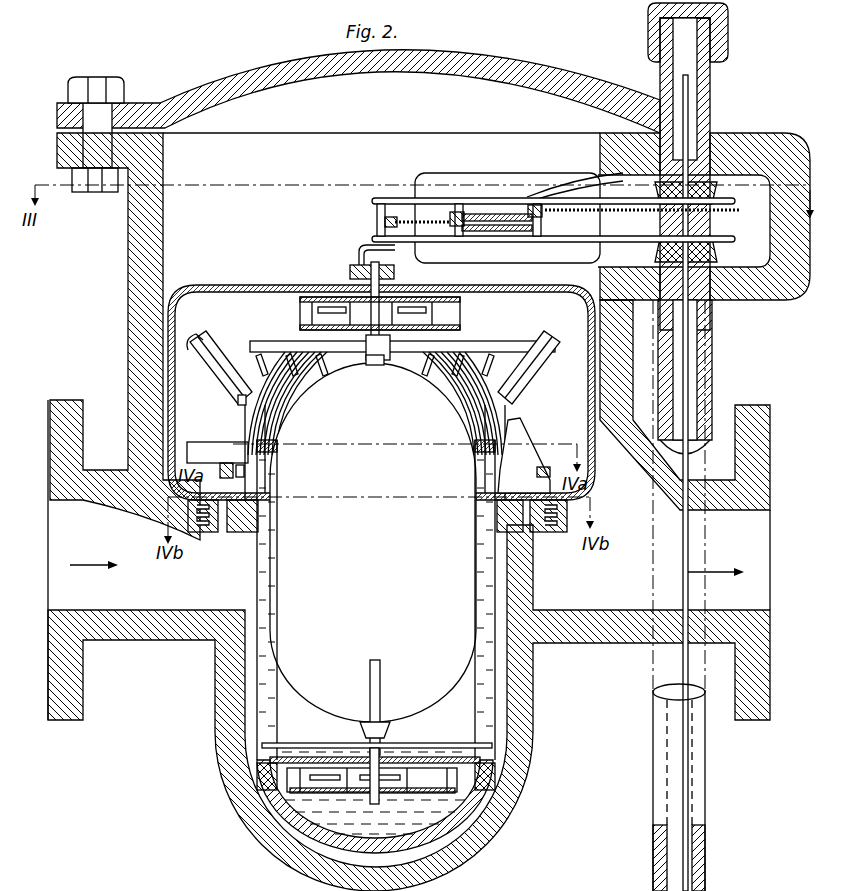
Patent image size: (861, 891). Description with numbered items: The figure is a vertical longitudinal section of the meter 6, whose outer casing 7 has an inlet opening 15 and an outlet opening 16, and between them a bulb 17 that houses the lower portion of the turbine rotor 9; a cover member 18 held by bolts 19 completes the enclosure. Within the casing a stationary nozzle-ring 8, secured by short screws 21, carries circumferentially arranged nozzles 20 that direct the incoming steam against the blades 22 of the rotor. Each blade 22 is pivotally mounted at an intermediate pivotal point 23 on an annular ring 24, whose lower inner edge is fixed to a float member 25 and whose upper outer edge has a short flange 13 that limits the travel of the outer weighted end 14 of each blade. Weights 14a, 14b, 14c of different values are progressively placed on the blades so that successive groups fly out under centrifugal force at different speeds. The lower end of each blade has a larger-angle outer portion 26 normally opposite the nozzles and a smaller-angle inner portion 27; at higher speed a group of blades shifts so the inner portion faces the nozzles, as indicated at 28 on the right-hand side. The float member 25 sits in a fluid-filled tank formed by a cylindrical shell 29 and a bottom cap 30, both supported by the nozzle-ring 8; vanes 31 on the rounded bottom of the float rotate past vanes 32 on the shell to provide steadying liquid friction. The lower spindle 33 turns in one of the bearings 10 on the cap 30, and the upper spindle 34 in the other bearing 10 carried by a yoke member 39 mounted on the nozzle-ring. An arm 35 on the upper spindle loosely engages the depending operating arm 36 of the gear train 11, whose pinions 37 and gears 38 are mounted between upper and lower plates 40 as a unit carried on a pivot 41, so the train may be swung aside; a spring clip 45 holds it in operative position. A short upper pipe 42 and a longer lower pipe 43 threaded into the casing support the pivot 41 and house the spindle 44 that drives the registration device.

The meter 6 is at (164, 716).
The outer casing 7 is at (128, 301).
The stationary nozzle-ring 8 is at (249, 530).
The turbine rotor 9 is at (202, 414).
The bearings 10 is at (452, 296).
The gear train 11 is at (356, 211).
The short flange 13 is at (332, 352).
The outer weighted end 14 is at (204, 370).
The weight 14a is at (262, 354).
The weight 14b is at (292, 354).
The weight 14c is at (322, 354).
The inlet opening 15 is at (58, 502).
The outlet opening 16 is at (764, 508).
The bulb 17 is at (494, 838).
The cover member 18 is at (235, 86).
The bolts 19 is at (112, 82).
The nozzles 20 is at (223, 530).
The short screws 21 is at (204, 530).
The blades 22 is at (245, 437).
The pivotal point 23 is at (240, 402).
The annular ring 24 is at (189, 343).
The float member 25 is at (373, 538).
The outer portion 26 is at (220, 470).
The inner portion 27 is at (240, 470).
The shifted blade position 28 is at (525, 462).
The cylindrical shell 29 is at (258, 752).
The bottom cap 30 is at (300, 808).
The vanes 31 is at (377, 707).
The vanes 32 is at (262, 722).
The lower spindle 33 is at (380, 804).
The upper spindle 34 is at (388, 331).
The arm 35 is at (345, 293).
The operating arm 36 is at (350, 259).
The pinions 37 is at (462, 244).
The gears 38 is at (512, 228).
The yoke member 39 is at (240, 290).
The plates 40 is at (397, 198).
The pivot 41 is at (712, 165).
The upper pipe 42 is at (712, 85).
The lower pipe 43 is at (714, 334).
The spindle 44 is at (690, 113).
The spring clip 45 is at (566, 178).